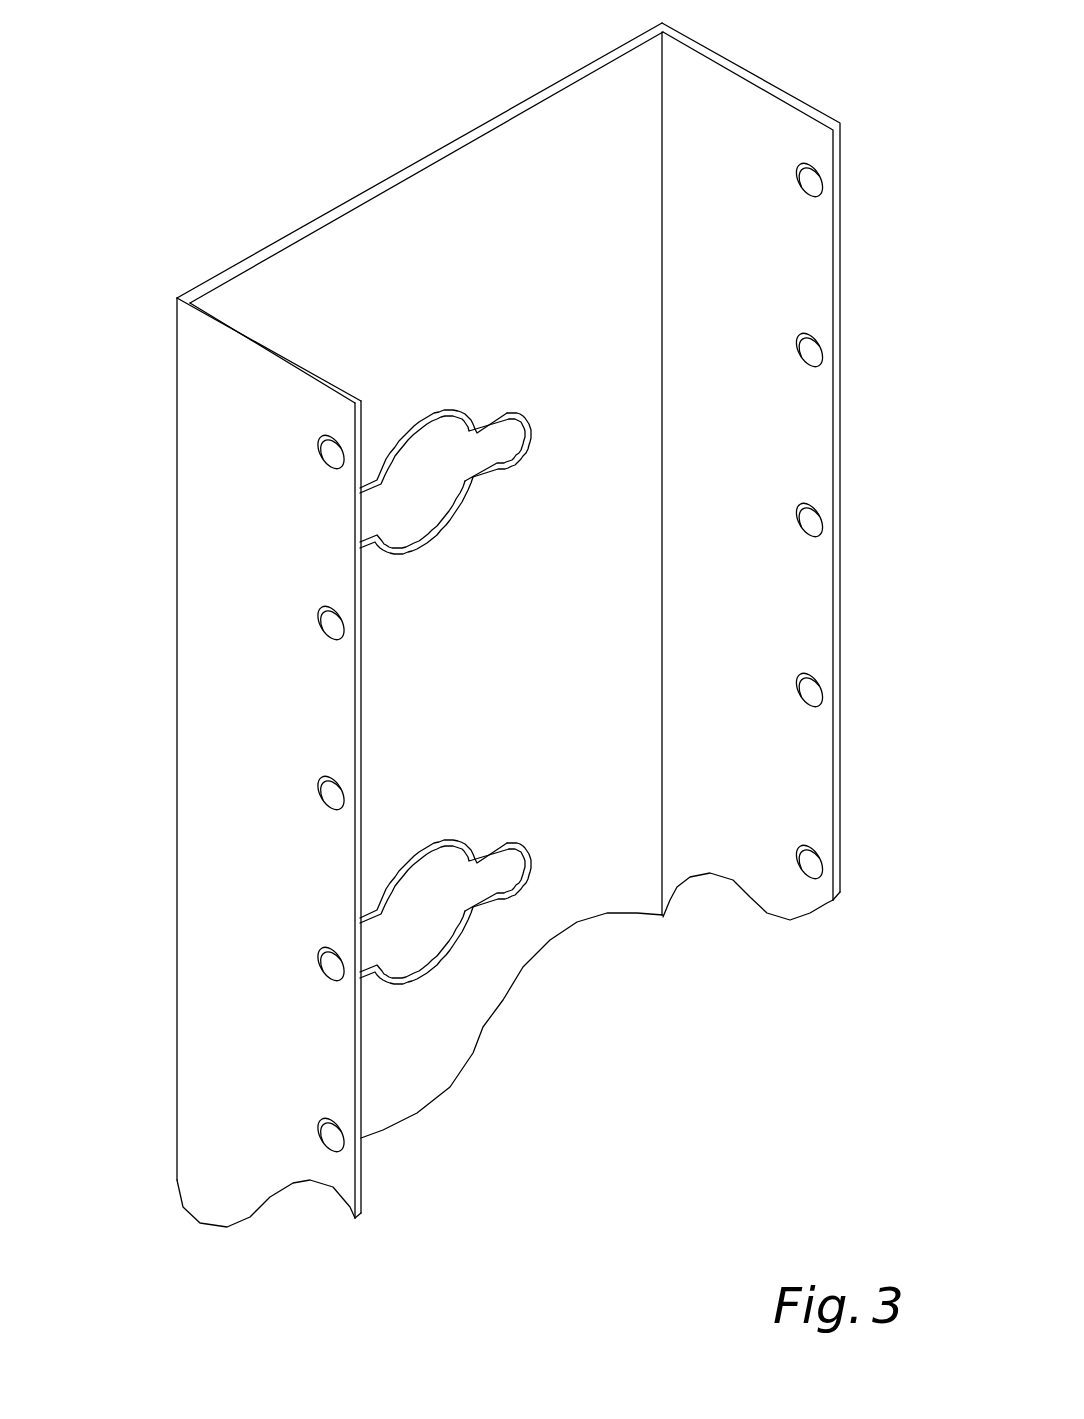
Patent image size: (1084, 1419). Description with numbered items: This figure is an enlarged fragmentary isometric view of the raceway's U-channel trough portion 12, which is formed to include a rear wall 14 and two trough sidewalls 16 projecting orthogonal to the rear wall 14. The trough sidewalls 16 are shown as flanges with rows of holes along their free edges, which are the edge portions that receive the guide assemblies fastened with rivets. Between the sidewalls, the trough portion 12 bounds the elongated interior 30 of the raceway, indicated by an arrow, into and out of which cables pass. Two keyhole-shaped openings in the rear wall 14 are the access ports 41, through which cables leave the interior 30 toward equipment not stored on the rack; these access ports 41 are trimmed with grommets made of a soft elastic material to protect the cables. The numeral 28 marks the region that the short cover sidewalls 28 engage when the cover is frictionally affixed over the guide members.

The trough portion 12 is at (393, 173).
The rear wall 14 is at (250, 255).
The trough sidewalls 16 is at (803, 100).
The cover sidewalls 28 is at (432, 453).
The interior 30 is at (715, 125).
The access ports 41 is at (500, 472).